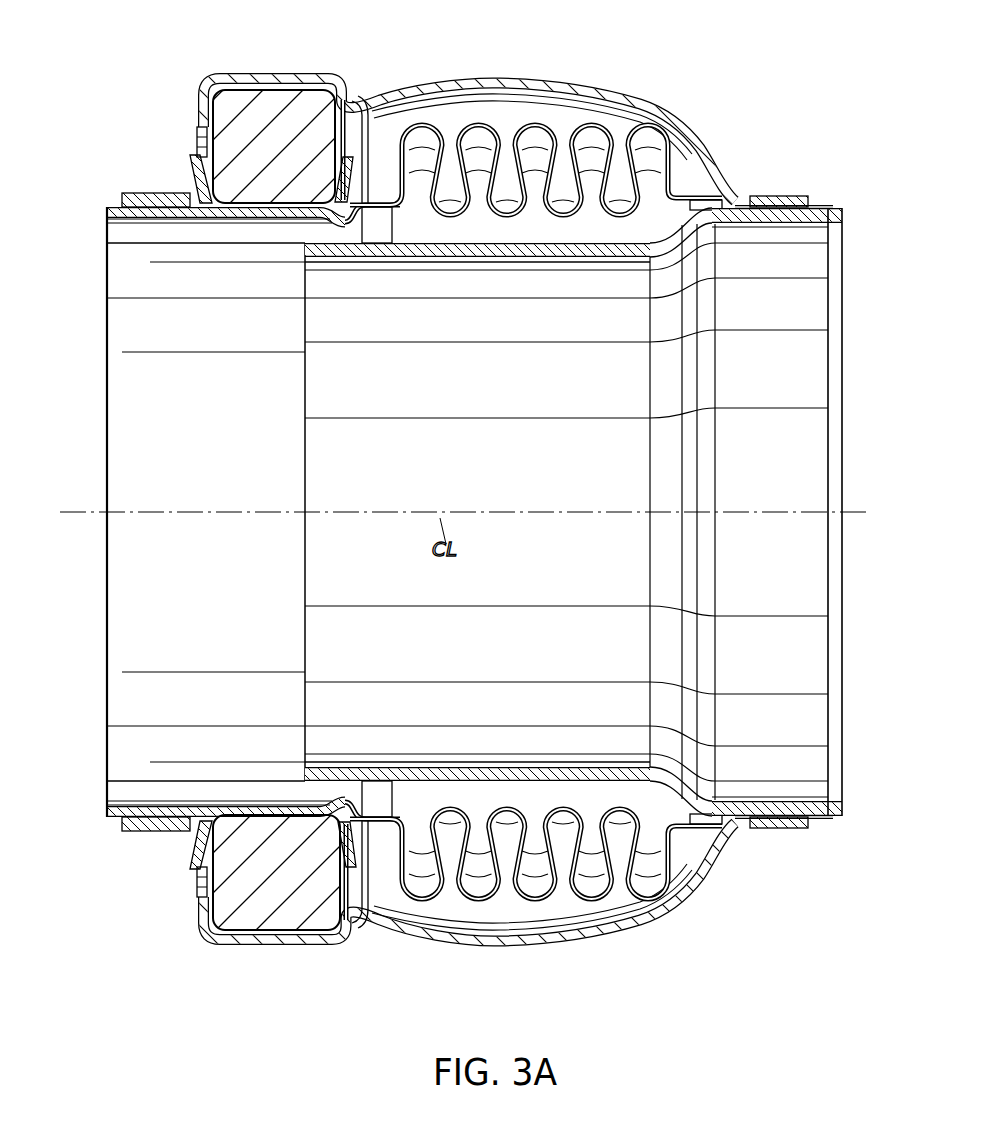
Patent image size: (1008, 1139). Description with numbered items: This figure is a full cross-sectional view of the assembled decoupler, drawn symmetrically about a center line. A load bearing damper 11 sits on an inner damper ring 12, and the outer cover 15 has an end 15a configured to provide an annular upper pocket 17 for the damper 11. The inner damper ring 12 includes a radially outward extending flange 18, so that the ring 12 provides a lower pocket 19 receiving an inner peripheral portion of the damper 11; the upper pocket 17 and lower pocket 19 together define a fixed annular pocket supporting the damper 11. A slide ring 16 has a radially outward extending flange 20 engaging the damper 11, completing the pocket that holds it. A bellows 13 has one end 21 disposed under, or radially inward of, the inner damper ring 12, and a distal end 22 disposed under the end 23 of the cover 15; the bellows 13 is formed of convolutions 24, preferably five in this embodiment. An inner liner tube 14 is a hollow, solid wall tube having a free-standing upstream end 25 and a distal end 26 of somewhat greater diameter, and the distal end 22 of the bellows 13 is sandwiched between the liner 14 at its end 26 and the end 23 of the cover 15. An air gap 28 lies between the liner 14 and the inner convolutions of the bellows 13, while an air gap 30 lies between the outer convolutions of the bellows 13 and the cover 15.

The load bearing damper 11 is at (232, 108).
The inner damper ring 12 is at (107, 207).
The bellows 13 is at (479, 122).
The inner liner tube 14 is at (542, 262).
The cover 15 is at (503, 80).
The end of cover 15a is at (267, 76).
The slide ring 16 is at (125, 193).
The annular upper pocket 17 is at (332, 100).
The radially outward extending flange 18 is at (371, 112).
The lower pocket 19 is at (255, 200).
The radially outward extending flange 20 is at (195, 163).
The end of bellows 21 is at (153, 223).
The distal end of bellows 22 is at (826, 208).
The end of cover 23 is at (778, 200).
The convolutions 24 is at (620, 128).
The end of inner liner tube 25 is at (345, 252).
The distal end of inner liner tube 26 is at (798, 222).
The air gap 28 is at (304, 243).
The air gap 30 is at (545, 110).